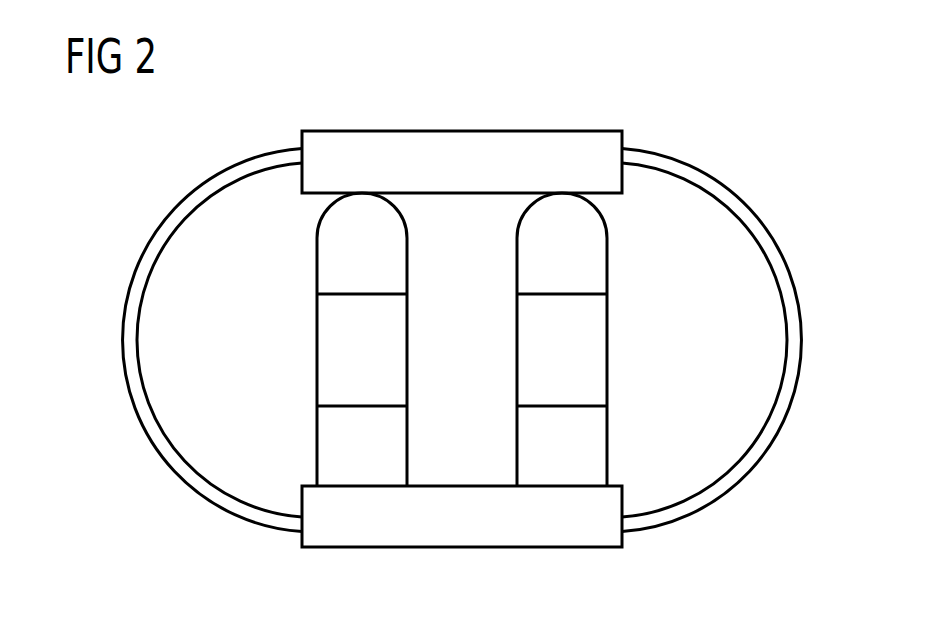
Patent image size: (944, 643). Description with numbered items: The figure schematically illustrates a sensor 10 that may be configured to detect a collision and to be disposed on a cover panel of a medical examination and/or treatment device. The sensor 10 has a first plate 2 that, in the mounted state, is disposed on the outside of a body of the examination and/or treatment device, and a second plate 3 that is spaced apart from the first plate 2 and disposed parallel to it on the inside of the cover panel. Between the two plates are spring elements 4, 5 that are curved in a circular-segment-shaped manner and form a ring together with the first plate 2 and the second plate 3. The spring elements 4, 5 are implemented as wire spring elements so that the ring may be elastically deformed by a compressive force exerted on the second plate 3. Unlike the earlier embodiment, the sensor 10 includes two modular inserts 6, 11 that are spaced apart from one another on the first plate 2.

The first plate 2 is at (478, 548).
The second plate 3 is at (462, 130).
The spring element 4 is at (129, 325).
The spring element 5 is at (794, 326).
The modular insert 6 is at (638, 319).
The sensor 10 is at (136, 491).
The modular insert 11 is at (284, 319).